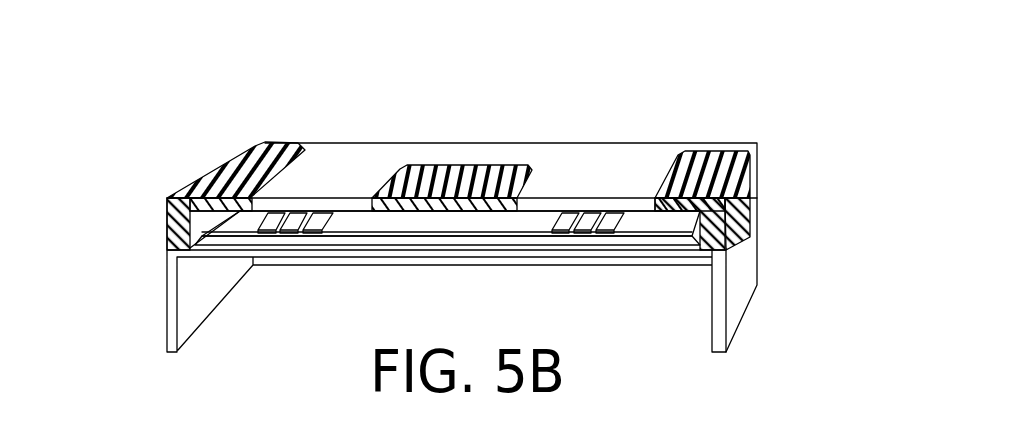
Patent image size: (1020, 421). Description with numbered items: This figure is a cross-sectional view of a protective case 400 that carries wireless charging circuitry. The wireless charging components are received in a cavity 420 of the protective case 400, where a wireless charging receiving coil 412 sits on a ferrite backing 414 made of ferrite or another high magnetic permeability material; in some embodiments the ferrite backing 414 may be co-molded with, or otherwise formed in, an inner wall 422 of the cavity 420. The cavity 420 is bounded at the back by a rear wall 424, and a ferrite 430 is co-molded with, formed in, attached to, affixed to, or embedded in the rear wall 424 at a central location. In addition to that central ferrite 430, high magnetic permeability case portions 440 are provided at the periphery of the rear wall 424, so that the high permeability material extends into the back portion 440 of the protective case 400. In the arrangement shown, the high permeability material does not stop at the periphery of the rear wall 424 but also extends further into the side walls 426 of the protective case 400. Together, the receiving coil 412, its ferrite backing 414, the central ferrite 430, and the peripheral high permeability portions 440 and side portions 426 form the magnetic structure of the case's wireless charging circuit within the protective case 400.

The protective case 400 is at (458, 63).
The wireless charging receiving coil 412 is at (300, 222).
The ferrite backing 414 is at (377, 240).
The cavity 420 is at (202, 222).
The inner wall 422 is at (593, 258).
The rear wall 424 is at (563, 172).
The side walls 426 is at (167, 227).
The ferrite 430 is at (472, 178).
The high magnetic permeability case portions 440 is at (232, 183).